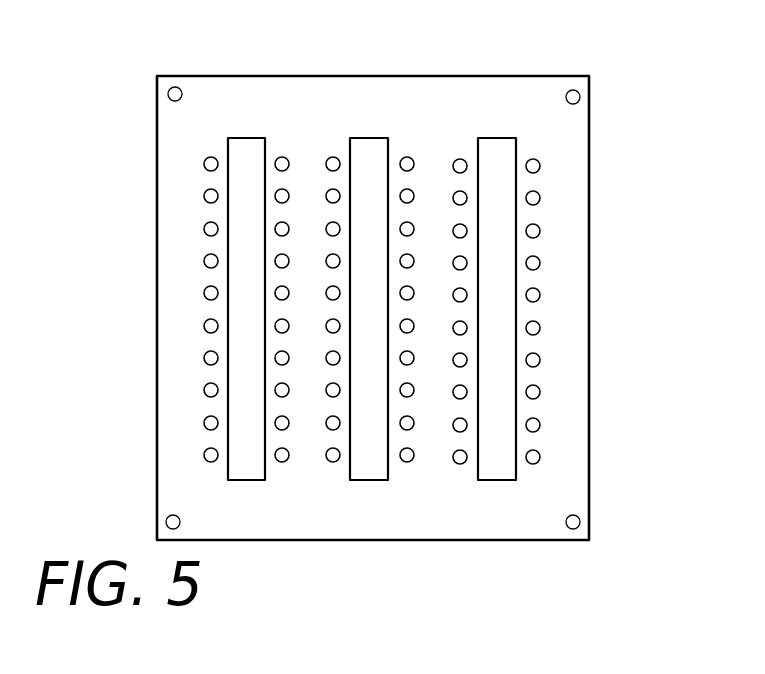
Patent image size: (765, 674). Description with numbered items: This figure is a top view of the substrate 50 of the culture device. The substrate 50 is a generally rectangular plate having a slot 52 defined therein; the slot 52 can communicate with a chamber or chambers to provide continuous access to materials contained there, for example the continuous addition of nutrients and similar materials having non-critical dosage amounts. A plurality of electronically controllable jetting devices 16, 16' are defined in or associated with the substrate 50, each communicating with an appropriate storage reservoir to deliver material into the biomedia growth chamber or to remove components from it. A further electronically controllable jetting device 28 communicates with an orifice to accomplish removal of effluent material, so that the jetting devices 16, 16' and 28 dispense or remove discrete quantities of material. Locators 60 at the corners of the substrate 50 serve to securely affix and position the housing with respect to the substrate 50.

The substrate 50 is at (573, 365).
The slot 52 is at (500, 195).
The locators 60 is at (580, 95).
The jetting device 28 is at (326, 194).
The electronically controllable jetting device 16 is at (396, 89).
The electronically controllable jetting device 16' is at (459, 89).